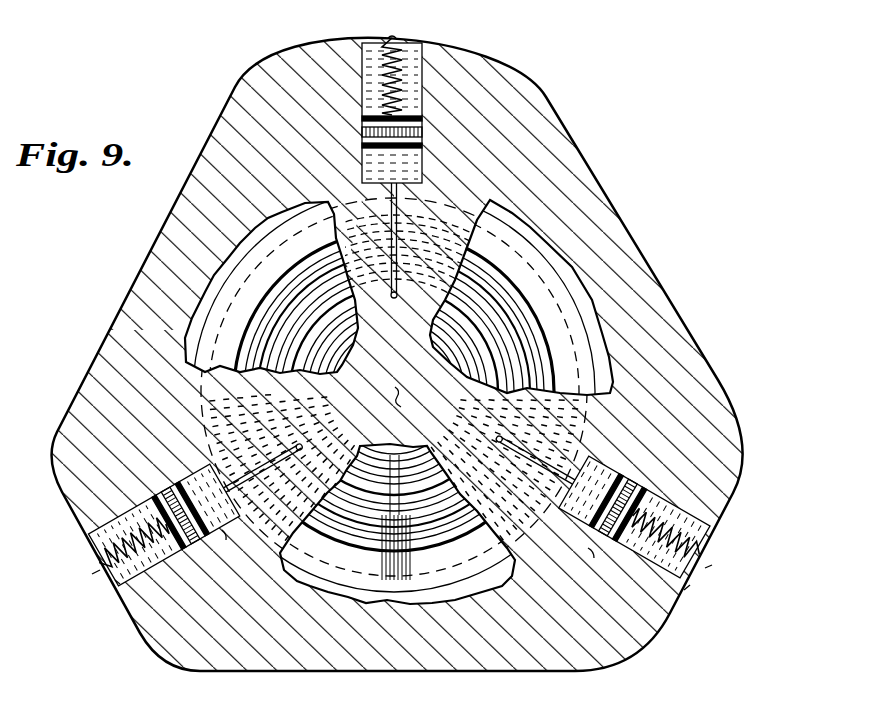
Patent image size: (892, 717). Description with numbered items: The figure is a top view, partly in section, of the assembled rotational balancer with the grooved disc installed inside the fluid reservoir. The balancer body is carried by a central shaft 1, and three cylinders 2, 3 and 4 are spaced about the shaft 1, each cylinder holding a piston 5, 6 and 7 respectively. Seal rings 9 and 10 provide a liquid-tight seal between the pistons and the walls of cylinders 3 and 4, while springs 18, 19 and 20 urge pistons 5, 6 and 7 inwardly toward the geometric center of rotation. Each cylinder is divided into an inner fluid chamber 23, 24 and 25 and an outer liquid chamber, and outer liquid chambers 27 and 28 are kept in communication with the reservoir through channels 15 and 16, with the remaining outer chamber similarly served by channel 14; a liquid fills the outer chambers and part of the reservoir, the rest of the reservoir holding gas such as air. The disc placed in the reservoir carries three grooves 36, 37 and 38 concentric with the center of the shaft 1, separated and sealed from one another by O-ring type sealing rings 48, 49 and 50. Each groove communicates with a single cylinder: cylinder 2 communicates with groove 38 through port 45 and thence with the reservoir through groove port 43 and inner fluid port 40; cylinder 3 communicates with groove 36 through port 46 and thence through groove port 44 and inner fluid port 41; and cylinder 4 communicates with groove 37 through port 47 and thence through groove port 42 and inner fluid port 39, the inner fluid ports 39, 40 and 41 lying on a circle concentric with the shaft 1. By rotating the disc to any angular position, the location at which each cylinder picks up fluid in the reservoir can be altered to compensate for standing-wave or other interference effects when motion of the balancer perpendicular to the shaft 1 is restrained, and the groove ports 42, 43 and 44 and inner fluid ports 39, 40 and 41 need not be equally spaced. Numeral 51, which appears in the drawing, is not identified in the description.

The shaft 1 is at (401, 407).
The cylinder 2 is at (426, 95).
The cylinder 3 is at (600, 478).
The cylinder 4 is at (228, 536).
The piston 5 is at (423, 143).
The piston 6 is at (626, 486).
The piston 7 is at (196, 536).
The seal ring 9 is at (596, 556).
The seal ring 10 is at (156, 491).
The channel 14 is at (400, 38).
The channel 15 is at (705, 568).
The channel 16 is at (100, 570).
The spring 18 is at (425, 38).
The spring 19 is at (700, 546).
The spring 20 is at (115, 580).
The inner fluid chamber 23 is at (377, 163).
The inner fluid chamber 24 is at (573, 531).
The inner fluid chamber 25 is at (184, 471).
The outer liquid chamber 27 is at (690, 585).
The outer liquid chamber 28 is at (96, 544).
The groove 36 is at (540, 374).
The groove 37 is at (503, 345).
The groove 38 is at (466, 382).
The inner fluid port 39 is at (462, 346).
The inner fluid port 40 is at (381, 540).
The inner fluid port 41 is at (342, 343).
The groove port 42 is at (520, 290).
The groove port 43 is at (396, 442).
The groove port 44 is at (312, 338).
The port 45 is at (398, 308).
The port 46 is at (506, 504).
The port 47 is at (242, 422).
The sealing ring 48 is at (454, 530).
The sealing ring 49 is at (420, 532).
The sealing ring 50 is at (348, 526).
The annular channel 51 is at (372, 442).